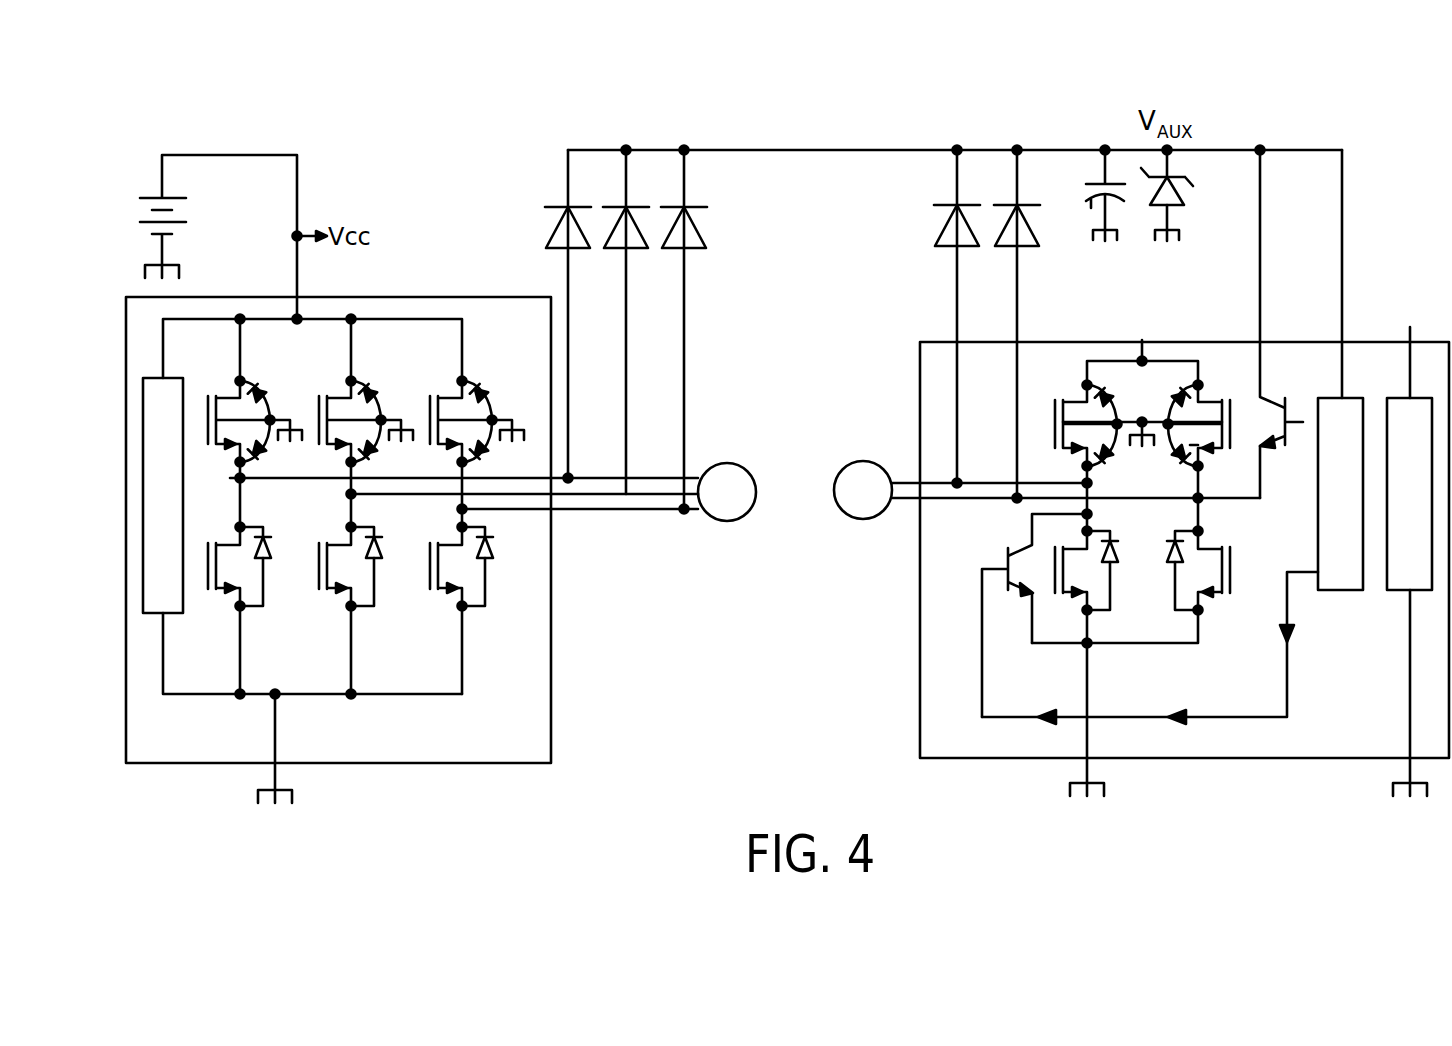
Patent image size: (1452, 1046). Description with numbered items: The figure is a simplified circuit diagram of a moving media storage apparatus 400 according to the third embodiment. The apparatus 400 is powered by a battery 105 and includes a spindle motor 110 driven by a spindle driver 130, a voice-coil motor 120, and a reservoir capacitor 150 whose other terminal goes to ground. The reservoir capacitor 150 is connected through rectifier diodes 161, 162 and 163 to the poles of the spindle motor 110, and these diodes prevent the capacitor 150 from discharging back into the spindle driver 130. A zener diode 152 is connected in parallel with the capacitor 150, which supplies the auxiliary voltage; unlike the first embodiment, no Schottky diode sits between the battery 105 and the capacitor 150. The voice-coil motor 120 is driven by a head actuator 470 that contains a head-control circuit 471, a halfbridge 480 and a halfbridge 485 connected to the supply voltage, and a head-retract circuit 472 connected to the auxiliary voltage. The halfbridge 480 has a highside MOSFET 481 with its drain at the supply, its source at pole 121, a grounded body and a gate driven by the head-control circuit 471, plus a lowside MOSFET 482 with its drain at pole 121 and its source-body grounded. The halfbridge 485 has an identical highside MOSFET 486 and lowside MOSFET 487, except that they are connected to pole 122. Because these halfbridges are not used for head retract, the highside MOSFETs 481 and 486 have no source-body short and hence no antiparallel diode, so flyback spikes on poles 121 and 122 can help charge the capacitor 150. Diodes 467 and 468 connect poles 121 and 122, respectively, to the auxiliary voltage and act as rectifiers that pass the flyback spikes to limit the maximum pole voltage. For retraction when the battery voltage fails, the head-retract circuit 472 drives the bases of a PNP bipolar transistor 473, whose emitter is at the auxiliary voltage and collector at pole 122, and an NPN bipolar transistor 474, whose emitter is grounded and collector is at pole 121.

The battery 105 is at (158, 198).
The spindle motor 110 is at (752, 472).
The voice-coil motor 120 is at (863, 519).
The pole 121 is at (1030, 483).
The pole 122 is at (1030, 500).
The spindle driver 130 is at (552, 593).
The reservoir capacitor 150 is at (1087, 196).
The zener diode 152 is at (1192, 181).
The rectifier diode 161 is at (555, 250).
The rectifier diode 162 is at (613, 250).
The rectifier diode 163 is at (671, 250).
The moving media storage apparatus 400 is at (972, 130).
The diode 467 is at (947, 226).
The diode 468 is at (1005, 232).
The head actuator 470 is at (920, 655).
The head-control circuit 471 is at (1407, 592).
The head-retract circuit 472 is at (1340, 592).
The PNP bipolar transistor 473 is at (1268, 398).
The NPN bipolar transistor 474 is at (1022, 598).
The halfbridge 480 is at (1072, 388).
The highside MOSFET 481 is at (1072, 396).
The lowside MOSFET 482 is at (1070, 592).
The halfbridge 485 is at (1224, 390).
The highside MOSFET 486 is at (1213, 447).
The lowside MOSFET 487 is at (1213, 595).